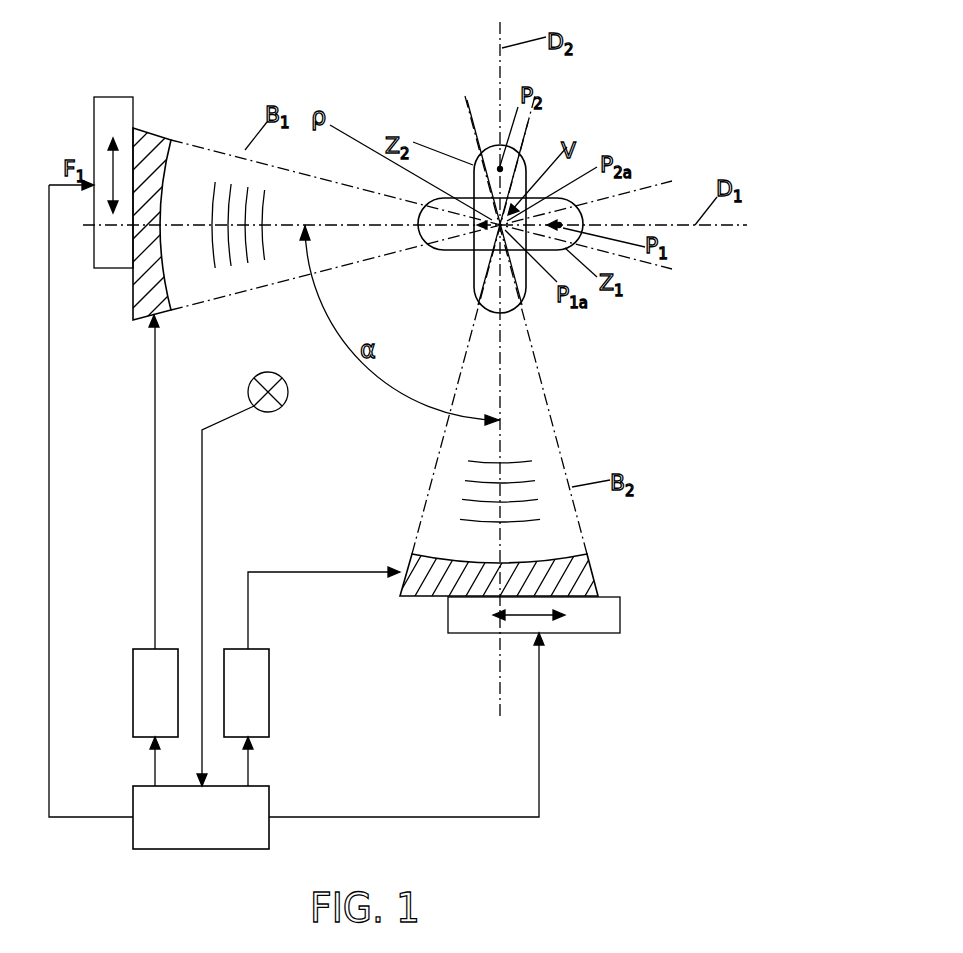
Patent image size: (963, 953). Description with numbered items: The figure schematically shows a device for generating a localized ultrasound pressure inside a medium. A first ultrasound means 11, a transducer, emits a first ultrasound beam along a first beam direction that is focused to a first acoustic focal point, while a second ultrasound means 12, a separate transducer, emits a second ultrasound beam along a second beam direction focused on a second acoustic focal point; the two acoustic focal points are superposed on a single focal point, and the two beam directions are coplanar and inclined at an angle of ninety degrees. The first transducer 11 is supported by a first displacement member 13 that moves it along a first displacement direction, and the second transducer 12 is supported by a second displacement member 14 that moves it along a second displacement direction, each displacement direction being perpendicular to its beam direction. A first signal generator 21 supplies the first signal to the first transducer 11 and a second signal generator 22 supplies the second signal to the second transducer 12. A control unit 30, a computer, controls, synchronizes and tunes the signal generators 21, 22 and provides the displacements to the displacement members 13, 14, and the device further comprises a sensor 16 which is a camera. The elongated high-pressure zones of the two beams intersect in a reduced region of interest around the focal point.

The first ultrasound means 11 is at (143, 148).
The second ultrasound means 12 is at (575, 577).
The first displacement member 13 is at (94, 137).
The second displacement member 14 is at (593, 635).
The sensor 16 is at (250, 383).
The first signal generator 21 is at (133, 697).
The second signal generator 22 is at (269, 690).
The control unit 30 is at (269, 805).